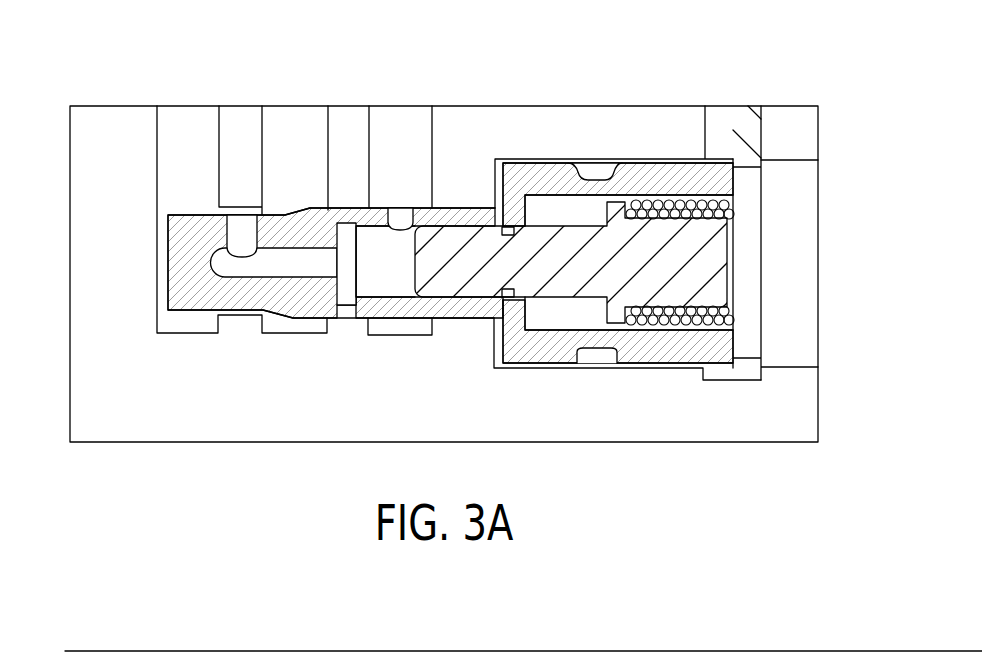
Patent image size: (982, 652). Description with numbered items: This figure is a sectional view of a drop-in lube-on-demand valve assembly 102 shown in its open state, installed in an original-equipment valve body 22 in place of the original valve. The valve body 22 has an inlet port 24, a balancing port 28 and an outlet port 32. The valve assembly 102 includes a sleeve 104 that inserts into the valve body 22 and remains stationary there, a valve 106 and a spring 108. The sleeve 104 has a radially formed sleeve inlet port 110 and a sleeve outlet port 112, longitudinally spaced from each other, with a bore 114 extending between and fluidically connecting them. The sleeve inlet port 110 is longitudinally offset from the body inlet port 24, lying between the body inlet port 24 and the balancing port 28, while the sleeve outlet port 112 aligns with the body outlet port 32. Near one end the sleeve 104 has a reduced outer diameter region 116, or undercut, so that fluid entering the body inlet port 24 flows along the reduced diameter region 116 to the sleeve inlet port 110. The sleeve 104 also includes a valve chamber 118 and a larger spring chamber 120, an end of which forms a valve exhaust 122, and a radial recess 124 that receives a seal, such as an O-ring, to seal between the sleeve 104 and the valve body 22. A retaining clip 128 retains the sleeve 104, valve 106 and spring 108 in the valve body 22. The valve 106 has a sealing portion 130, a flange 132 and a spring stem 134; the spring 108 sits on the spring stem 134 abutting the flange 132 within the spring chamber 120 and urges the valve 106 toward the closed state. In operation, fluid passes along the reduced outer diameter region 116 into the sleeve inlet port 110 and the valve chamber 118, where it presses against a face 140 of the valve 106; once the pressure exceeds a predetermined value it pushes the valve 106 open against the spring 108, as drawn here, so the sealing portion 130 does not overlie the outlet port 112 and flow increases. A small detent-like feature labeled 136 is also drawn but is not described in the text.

The valve body 22 is at (103, 112).
The balancing port 28 is at (187, 112).
The inlet port 24 is at (302, 112).
The outlet port 32 is at (400, 112).
The sleeve inlet port 110 is at (233, 220).
The reduced outer diameter region 116 is at (283, 217).
The sleeve outlet port 112 is at (398, 210).
The detent 136 is at (507, 227).
The valve assembly 102 is at (533, 95).
The valve 106 is at (571, 203).
The sleeve 104 is at (643, 167).
The spring 108 is at (678, 205).
The retaining clip 128 is at (762, 155).
The valve exhaust 122 is at (755, 260).
The bore 114 is at (293, 277).
The face 140 is at (412, 273).
The valve chamber 118 is at (392, 297).
The sealing portion 130 is at (463, 297).
The spring chamber 120 is at (562, 318).
The flange 132 is at (623, 313).
The spring stem 134 is at (707, 293).
The radial recess 124 is at (588, 363).